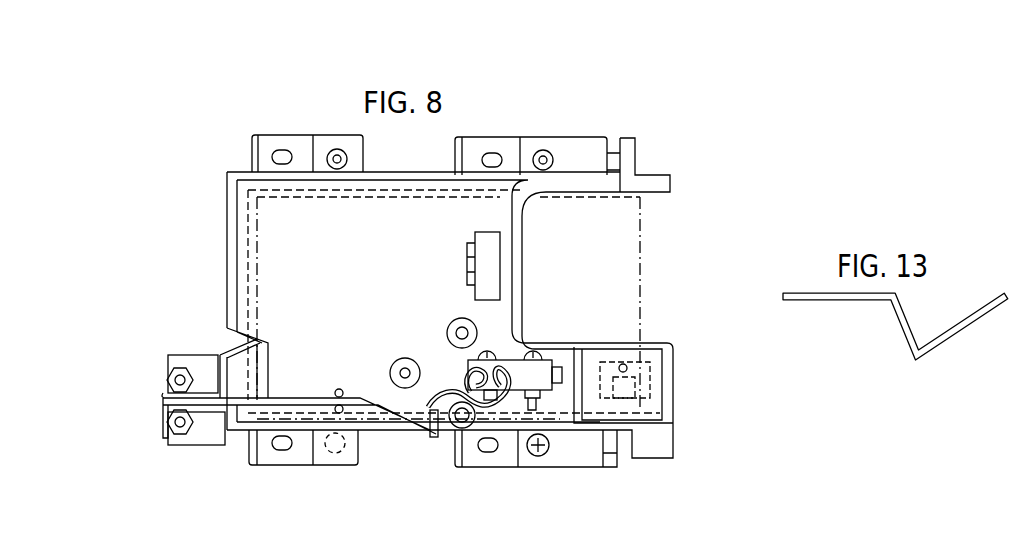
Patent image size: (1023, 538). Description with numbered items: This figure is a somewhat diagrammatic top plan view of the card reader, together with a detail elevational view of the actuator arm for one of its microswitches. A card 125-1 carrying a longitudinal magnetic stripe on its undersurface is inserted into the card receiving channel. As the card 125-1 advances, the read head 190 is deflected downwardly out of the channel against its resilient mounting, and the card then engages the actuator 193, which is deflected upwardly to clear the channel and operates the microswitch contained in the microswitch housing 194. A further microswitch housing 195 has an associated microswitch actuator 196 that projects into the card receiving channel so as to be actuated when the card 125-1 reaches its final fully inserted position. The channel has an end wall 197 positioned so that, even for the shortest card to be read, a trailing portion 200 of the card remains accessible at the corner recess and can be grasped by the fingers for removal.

In FIG. 8, the card 125-1 is at (240, 215).
In FIG. 8, the end wall 197 is at (247, 260).
In FIG. 8, the microswitch actuator 196 is at (238, 343).
In FIG. 8, the microswitch housing 195 is at (172, 362).
In FIG. 8, the microswitch housing 194 is at (543, 378).
In FIG. 8, the read head 190 is at (650, 378).
In FIG. 8, the trailing portion 200 is at (640, 290).
In FIG. 13, the actuator 193 is at (865, 302).